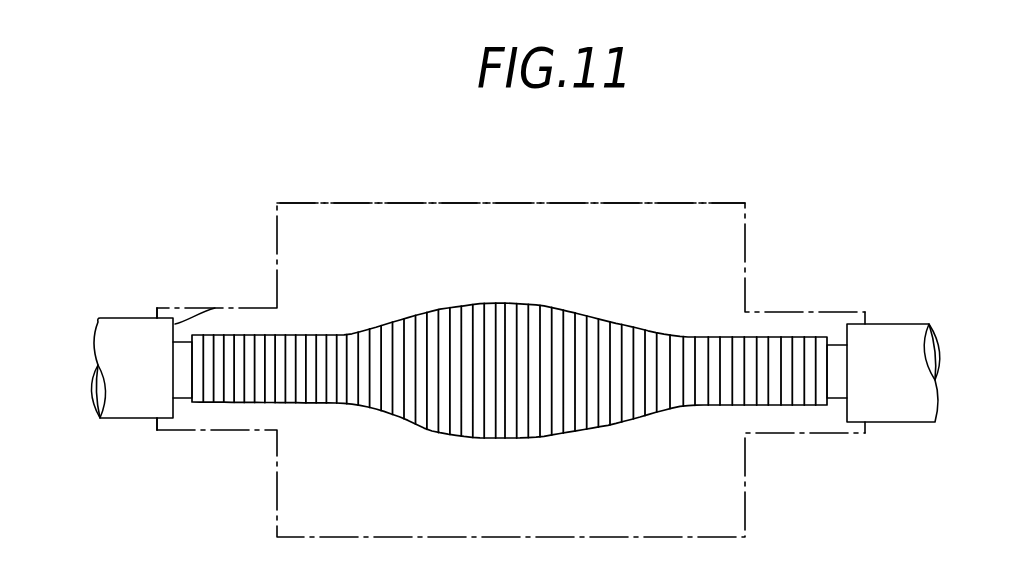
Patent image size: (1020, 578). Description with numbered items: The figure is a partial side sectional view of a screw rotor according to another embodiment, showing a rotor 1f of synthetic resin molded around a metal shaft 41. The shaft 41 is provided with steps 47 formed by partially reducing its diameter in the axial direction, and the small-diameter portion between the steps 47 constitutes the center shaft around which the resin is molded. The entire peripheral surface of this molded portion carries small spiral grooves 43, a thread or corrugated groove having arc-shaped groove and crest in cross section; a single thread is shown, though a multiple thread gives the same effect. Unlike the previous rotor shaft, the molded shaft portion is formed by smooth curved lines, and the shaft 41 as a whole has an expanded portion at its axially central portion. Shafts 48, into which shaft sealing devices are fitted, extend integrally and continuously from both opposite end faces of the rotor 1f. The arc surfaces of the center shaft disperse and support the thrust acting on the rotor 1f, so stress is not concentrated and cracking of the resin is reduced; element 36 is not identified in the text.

The rotor 1f is at (470, 205).
The clamp member 36 is at (122, 318).
The shaft 41 is at (766, 293).
The spiral groove 43 is at (588, 343).
The steps 47 is at (215, 308).
The shafts 48 is at (191, 310).